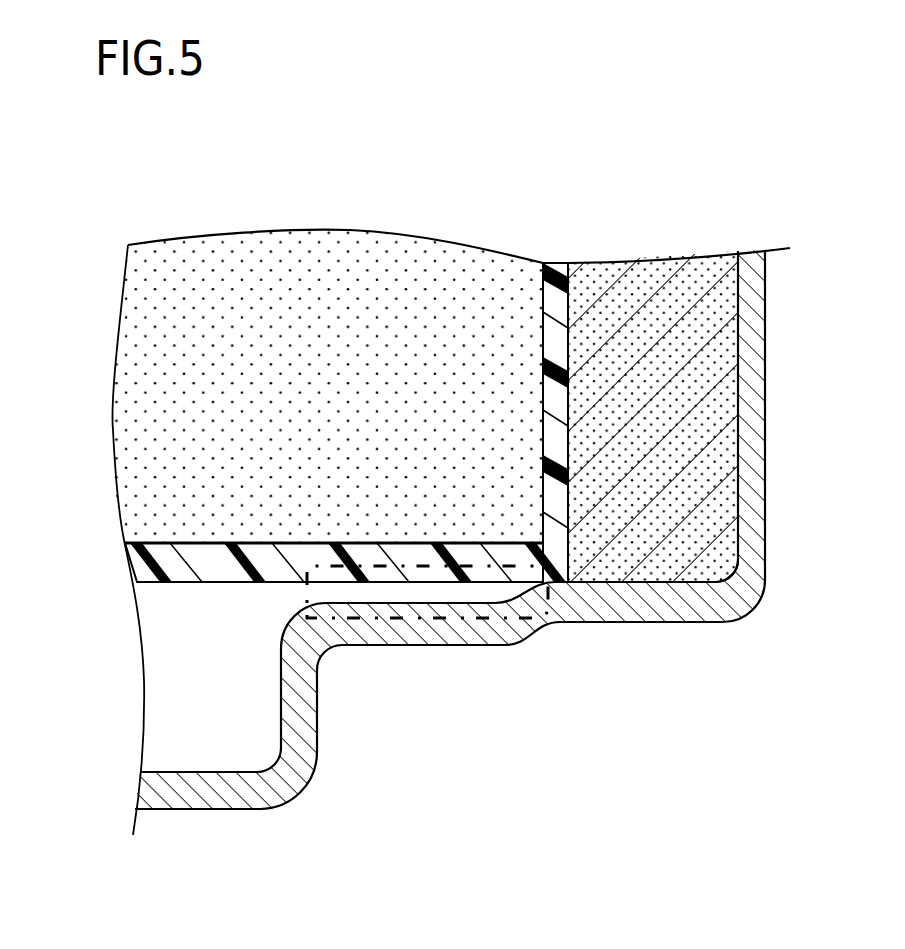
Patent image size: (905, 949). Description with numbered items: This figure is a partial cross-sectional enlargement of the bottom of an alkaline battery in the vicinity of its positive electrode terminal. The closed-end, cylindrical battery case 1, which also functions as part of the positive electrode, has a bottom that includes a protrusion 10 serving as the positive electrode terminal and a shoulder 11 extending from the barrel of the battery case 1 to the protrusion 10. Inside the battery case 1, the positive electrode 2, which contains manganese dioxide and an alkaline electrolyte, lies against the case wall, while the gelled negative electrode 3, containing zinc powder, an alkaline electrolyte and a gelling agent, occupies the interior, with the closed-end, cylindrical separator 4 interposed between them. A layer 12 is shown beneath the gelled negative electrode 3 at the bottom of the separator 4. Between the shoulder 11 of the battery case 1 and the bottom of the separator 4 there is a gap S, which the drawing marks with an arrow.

The battery case 1 is at (758, 365).
The positive electrode 2 is at (667, 293).
The gelled negative electrode 3 is at (303, 288).
The separator 4 is at (553, 338).
The protrusion 10 is at (207, 810).
The shoulder 11 is at (408, 647).
The bonding layer 12 is at (185, 543).
The gap S is at (303, 587).